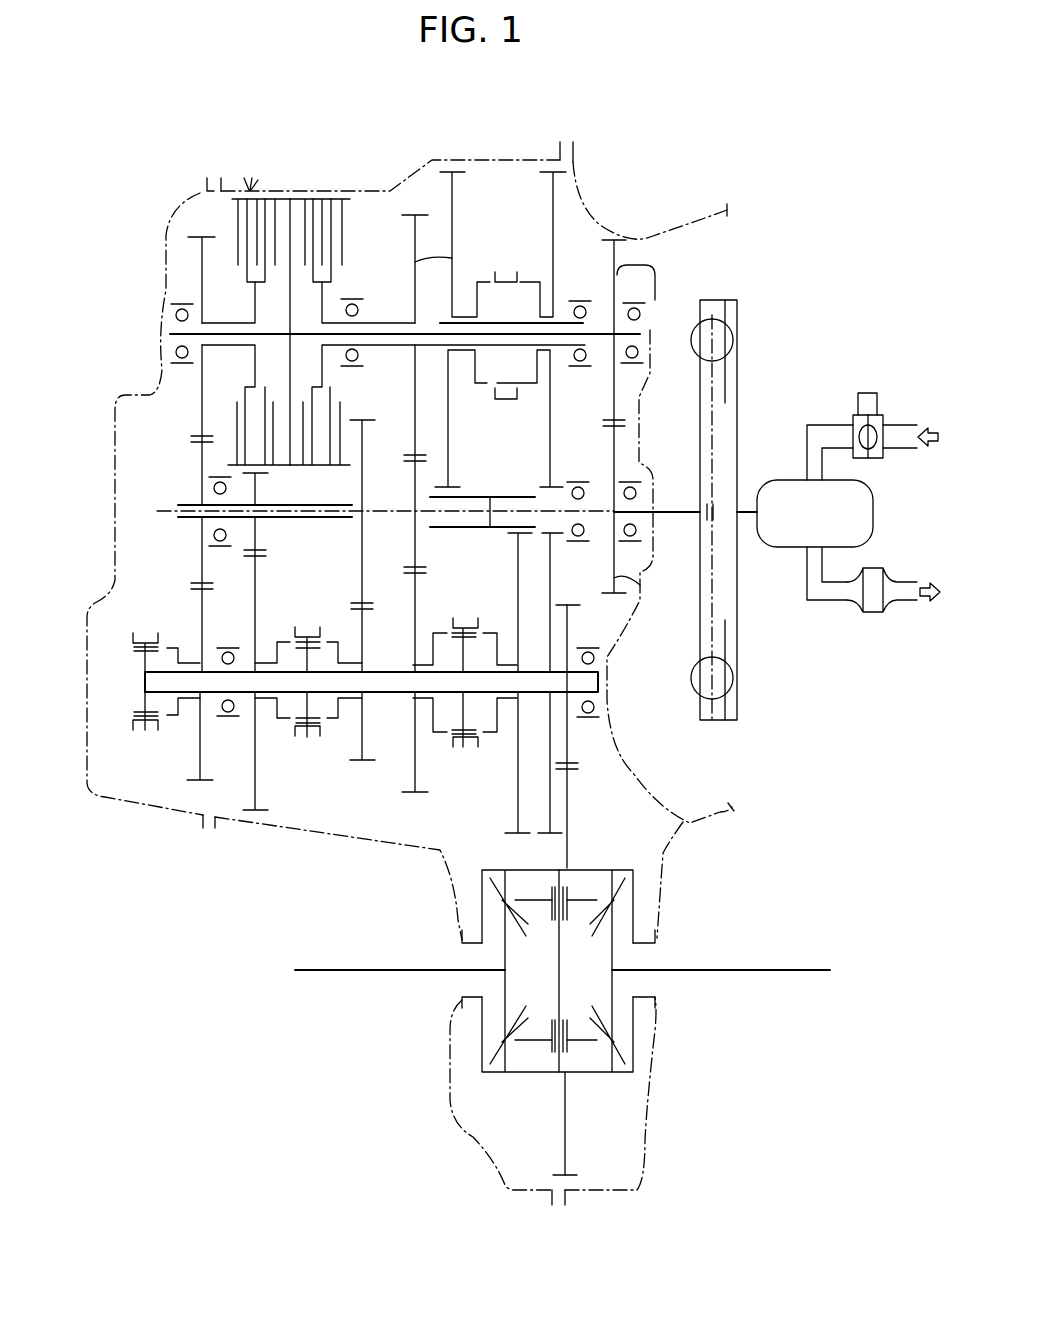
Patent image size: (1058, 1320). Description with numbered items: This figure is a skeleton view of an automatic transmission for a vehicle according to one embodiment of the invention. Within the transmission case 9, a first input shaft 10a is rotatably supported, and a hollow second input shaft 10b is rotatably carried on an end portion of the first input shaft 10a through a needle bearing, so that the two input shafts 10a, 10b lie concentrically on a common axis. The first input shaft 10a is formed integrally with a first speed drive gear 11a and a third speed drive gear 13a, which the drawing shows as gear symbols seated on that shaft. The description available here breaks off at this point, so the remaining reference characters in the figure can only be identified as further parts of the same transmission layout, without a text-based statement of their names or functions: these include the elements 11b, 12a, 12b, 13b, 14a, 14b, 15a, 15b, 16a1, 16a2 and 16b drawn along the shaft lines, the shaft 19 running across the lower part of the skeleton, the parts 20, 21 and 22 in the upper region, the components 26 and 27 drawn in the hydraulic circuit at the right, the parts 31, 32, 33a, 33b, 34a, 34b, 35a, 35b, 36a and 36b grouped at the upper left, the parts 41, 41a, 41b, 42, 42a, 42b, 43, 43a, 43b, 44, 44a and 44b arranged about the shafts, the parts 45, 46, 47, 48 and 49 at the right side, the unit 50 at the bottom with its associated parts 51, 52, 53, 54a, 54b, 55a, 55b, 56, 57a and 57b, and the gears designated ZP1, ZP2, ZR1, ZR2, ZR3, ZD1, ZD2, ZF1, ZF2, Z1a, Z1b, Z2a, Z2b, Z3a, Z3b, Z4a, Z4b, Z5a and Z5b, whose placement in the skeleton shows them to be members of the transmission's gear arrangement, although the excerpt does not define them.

The transmission case 9 is at (508, 160).
The first input shaft 10a is at (474, 494).
The second input shaft 10b is at (192, 504).
The first speed drive gear 11a is at (490, 530).
The hollow shaft portion 11b is at (517, 797).
The second speed gear train member 12a is at (266, 551).
The second speed gear train member 12b is at (258, 780).
The third speed drive gear 13a is at (413, 500).
The third speed gear train member 13b is at (412, 765).
The fourth speed gear train member 14a is at (200, 538).
The fourth speed gear train member 14b is at (200, 743).
The fifth speed gear train member 15a is at (362, 573).
The fifth speed gear train member 15b is at (360, 708).
The reverse gear train member 16a1 is at (553, 222).
The reverse gear train member 16a2 is at (452, 200).
The reverse shaft 16b is at (560, 806).
The counter shaft 19 is at (163, 682).
The input shaft 20 is at (387, 333).
The carrier 21 is at (452, 258).
The hub 22 is at (200, 268).
The accumulator 26 is at (863, 509).
The solenoid valve 27 is at (895, 403).
The clutch drum 31 is at (327, 197).
The check ball 32 is at (247, 184).
The clutch plates 33a is at (310, 198).
The clutch plates 33b is at (268, 197).
The second clutch 34a is at (322, 384).
The second clutch 34b is at (250, 383).
The clutch piston 35a is at (350, 187).
The clutch piston 35b is at (255, 222).
The piston hub 36a is at (332, 248).
The piston hub 36b is at (247, 275).
The first synchromesh mechanism 41 is at (455, 785).
The synchro sleeve 41a is at (470, 747).
The synchro sleeve 41b is at (465, 620).
The second synchromesh mechanism 42 is at (324, 765).
The synchro sleeve 42a is at (307, 703).
The synchro sleeve 42b is at (302, 627).
The third synchromesh mechanism 43 is at (127, 744).
The synchro sleeve 43a is at (140, 703).
The synchro sleeve 43b is at (150, 633).
The dog clutch 44 is at (545, 264).
The dog clutch member 44a is at (527, 388).
The dog clutch member 44b is at (495, 396).
The pump drive shaft 45 is at (680, 508).
The bearing support 46 is at (640, 586).
The bearing support 47 is at (640, 275).
The pump shaft 48 is at (748, 510).
The oil pump drive 49 is at (762, 305).
The differential 50 is at (652, 885).
The bearing 51 is at (570, 633).
The pinion shaft 52 is at (566, 1120).
The differential pinion shaft 53 is at (523, 1073).
The axle shaft 54a is at (757, 972).
The axle shaft 54b is at (322, 972).
The side gear 55a is at (622, 1024).
The side gear 55b is at (497, 1010).
The differential case 56 is at (560, 963).
The pinion gear 57a is at (598, 882).
The pinion gear 57b is at (485, 1133).
The planetary gear ZP1 is at (411, 258).
The planetary gear ZP2 is at (203, 268).
The ring gear ZR1 is at (553, 192).
The reverse gear ZR2 is at (548, 838).
The ring gear ZR3 is at (463, 227).
The drive gear ZD1 is at (595, 613).
The driven gear ZD2 is at (641, 396).
The final drive gear ZF1 is at (570, 752).
The final driven gear ZF2 is at (584, 1166).
The first speed gear Z1a is at (511, 480).
The first speed gear Z1b is at (514, 778).
The second speed gear Z2a is at (279, 572).
The second speed gear Z2b is at (255, 772).
The third speed gear Z3a is at (431, 557).
The third speed gear Z3b is at (410, 759).
The fourth speed gear Z4a is at (162, 560).
The fourth speed gear Z4b is at (200, 796).
The fifth speed gear Z5a is at (364, 535).
The fifth speed gear Z5b is at (361, 740).